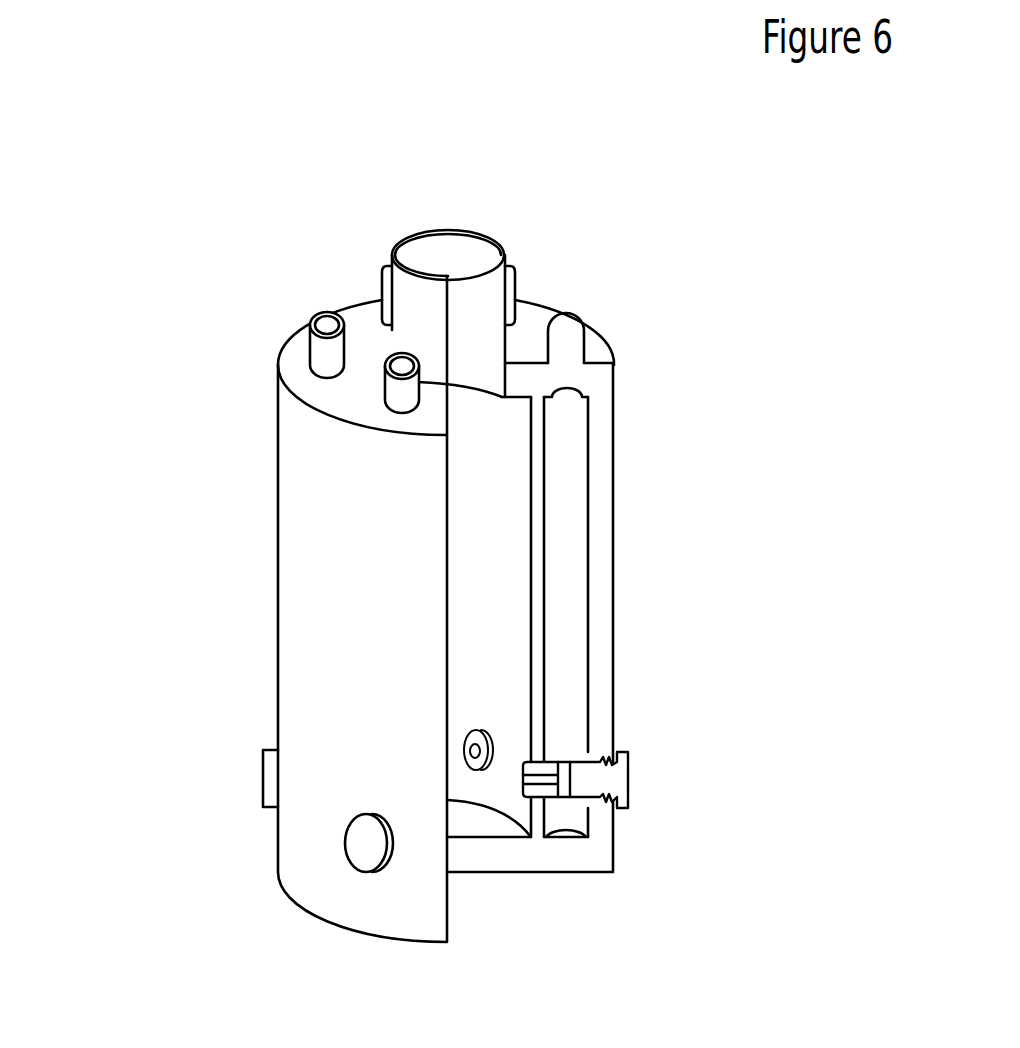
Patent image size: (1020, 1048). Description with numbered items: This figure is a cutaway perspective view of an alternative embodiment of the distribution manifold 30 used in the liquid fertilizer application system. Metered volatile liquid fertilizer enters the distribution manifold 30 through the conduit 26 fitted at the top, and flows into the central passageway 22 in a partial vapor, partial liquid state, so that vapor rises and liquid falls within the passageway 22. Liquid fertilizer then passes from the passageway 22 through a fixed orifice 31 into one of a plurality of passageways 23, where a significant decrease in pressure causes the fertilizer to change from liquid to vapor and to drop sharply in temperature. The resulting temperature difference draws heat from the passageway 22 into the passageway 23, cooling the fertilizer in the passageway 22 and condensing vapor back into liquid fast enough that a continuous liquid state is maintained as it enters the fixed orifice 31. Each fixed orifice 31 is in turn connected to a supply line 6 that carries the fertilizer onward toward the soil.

The supply line 6 is at (390, 352).
The passageway 22 is at (495, 502).
The passageway 23 is at (565, 607).
The conduit 26 is at (478, 232).
The distribution manifold 30 is at (276, 585).
The fixed orifice 31 is at (628, 776).